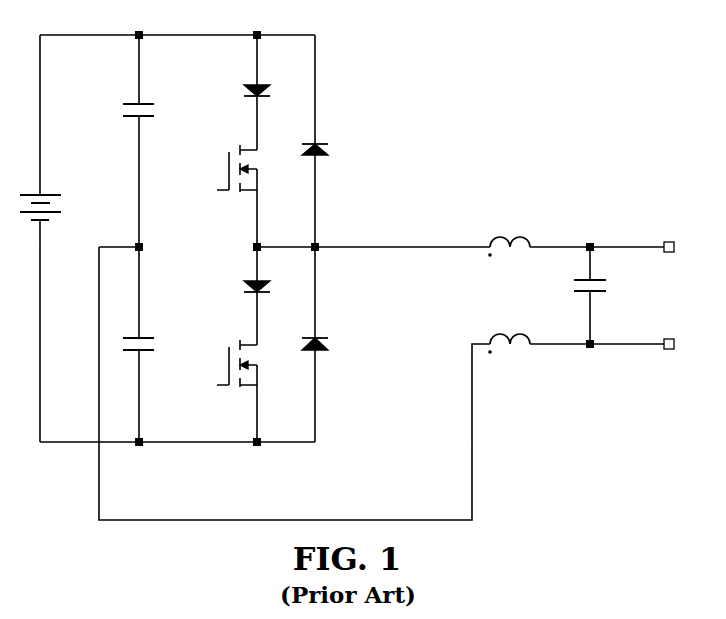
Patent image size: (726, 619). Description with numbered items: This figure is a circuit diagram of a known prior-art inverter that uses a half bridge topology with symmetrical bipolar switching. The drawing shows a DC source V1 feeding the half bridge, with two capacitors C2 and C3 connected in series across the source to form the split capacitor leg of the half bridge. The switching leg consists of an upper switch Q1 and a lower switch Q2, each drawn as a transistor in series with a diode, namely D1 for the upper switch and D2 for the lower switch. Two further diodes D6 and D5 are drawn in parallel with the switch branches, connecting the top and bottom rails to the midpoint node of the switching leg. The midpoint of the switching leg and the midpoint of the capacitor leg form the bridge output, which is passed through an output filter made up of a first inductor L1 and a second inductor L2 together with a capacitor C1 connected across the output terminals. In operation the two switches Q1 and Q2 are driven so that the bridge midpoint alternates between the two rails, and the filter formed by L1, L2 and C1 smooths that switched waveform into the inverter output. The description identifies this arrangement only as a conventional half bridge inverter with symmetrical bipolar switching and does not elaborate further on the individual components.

The DC voltage source V1 is at (49, 195).
The upper split capacitor C2 is at (148, 105).
The lower split capacitor C3 is at (148, 339).
The series diode of upper switch D1 is at (268, 85).
The series diode of lower switch D2 is at (268, 281).
The upper freewheeling diode D6 is at (302, 142).
The lower freewheeling diode D5 is at (302, 337).
The upper MOSFET switch Q1 is at (237, 178).
The lower MOSFET switch Q2 is at (237, 372).
The first output filter inductor L1 is at (509, 257).
The second output filter inductor L2 is at (509, 354).
The output filter capacitor C1 is at (599, 280).